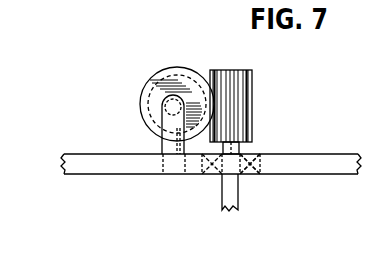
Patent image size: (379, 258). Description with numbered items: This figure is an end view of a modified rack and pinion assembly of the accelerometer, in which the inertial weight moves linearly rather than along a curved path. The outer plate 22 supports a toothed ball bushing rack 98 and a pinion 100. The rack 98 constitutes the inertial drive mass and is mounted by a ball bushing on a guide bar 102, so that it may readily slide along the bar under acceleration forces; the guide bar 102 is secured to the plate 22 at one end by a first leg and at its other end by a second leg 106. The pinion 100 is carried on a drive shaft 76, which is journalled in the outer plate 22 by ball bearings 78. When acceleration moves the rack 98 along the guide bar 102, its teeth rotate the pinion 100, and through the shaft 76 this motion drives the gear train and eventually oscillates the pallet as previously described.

The outer plate 22 is at (80, 162).
The toothed ball bushing rack 98 is at (161, 88).
The guide bar 102 is at (165, 102).
The second leg 106 is at (170, 131).
The pinion 100 is at (247, 105).
The ball bearings 78 is at (253, 153).
The drive shaft 76 is at (238, 196).